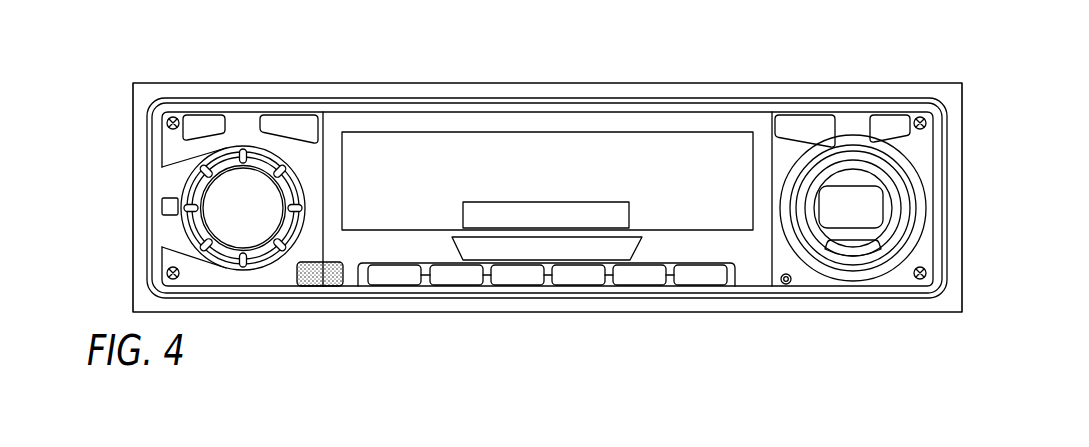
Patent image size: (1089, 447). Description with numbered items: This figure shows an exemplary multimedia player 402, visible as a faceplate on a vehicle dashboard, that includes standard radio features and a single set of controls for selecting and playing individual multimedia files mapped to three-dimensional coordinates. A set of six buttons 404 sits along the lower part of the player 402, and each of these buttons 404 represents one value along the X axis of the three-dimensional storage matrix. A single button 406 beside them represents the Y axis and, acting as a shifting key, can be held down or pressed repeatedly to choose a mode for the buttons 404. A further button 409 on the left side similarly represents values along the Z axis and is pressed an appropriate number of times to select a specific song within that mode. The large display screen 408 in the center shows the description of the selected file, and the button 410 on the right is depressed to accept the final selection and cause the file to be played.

The multimedia player 402 is at (832, 324).
The set of buttons 404 is at (392, 287).
The button 406 is at (320, 287).
The display screen 408 is at (665, 157).
The button 409 is at (162, 207).
The button 410 is at (858, 209).